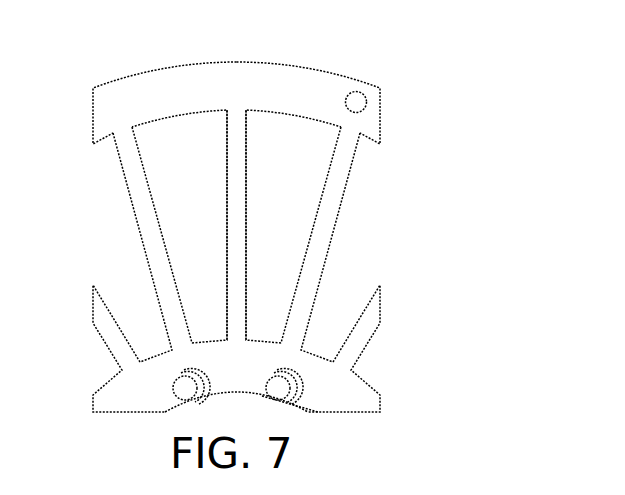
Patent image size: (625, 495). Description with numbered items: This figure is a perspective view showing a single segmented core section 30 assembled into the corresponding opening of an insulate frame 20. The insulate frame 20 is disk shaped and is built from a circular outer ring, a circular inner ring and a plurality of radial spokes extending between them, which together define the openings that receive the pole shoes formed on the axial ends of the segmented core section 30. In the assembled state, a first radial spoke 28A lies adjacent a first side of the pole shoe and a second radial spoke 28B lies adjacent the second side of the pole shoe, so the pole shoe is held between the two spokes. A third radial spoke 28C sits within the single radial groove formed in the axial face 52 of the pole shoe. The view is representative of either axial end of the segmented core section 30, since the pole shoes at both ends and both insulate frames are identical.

The first insulate frame 20 is at (255, 211).
The first radial spoke 28A is at (333, 178).
The second radial spoke 28B is at (152, 243).
The third radial spoke 28C is at (237, 228).
The segmented core section 30 is at (187, 157).
The axial face 52 is at (203, 215).